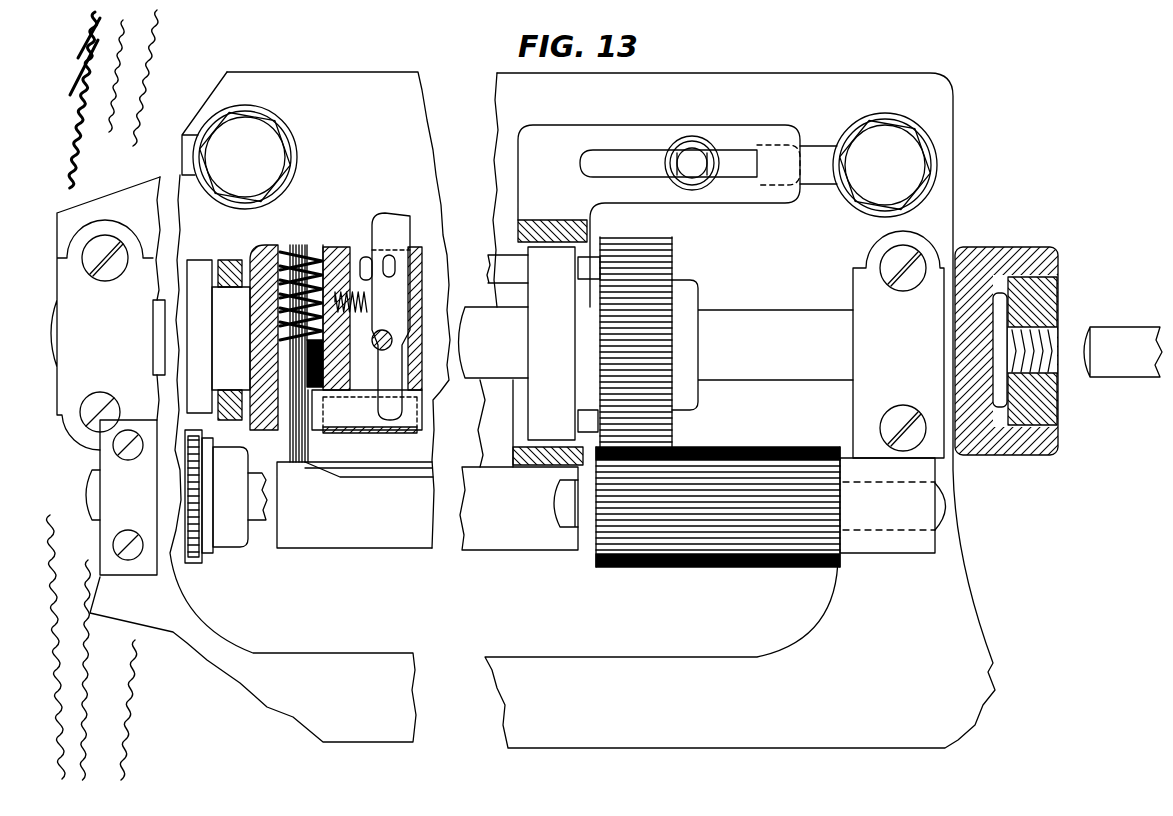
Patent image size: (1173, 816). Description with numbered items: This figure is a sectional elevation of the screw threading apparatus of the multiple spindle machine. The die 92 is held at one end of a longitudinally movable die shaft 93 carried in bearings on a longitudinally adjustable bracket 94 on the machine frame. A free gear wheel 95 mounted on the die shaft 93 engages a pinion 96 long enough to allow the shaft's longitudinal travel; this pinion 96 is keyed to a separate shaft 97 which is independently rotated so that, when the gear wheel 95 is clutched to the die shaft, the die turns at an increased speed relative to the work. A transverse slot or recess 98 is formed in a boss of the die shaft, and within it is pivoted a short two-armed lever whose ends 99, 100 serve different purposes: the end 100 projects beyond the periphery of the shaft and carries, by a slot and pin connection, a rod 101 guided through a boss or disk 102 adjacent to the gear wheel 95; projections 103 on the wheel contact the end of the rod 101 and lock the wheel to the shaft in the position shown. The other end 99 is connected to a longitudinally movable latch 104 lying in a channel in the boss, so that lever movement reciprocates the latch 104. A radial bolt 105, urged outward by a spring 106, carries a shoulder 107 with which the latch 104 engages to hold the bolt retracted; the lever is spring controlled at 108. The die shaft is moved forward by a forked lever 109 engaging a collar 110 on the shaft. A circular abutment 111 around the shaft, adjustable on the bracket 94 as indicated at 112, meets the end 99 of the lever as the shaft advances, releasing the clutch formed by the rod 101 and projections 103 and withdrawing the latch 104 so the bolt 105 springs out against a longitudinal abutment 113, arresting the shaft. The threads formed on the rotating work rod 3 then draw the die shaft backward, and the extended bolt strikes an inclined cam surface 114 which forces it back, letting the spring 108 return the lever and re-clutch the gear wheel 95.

The work rod 3 is at (1123, 352).
The die 92 is at (1055, 320).
The die shaft 93 is at (157, 323).
The bracket 94 is at (542, 410).
The free gear wheel 95 is at (665, 264).
The pinion 96 is at (760, 568).
The separate shaft 97 is at (258, 515).
The slot or recess 98 is at (342, 270).
The lever end 99 is at (430, 393).
The lever end 100 is at (392, 233).
The rod 101 is at (518, 265).
The boss or disk 102 is at (551, 343).
The projections 103 is at (593, 260).
The latch 104 is at (408, 418).
The bolt 105 is at (302, 253).
The spring 106 is at (278, 288).
The shoulder or projection 107 is at (325, 385).
The spring 108 is at (368, 299).
The forked lever 109 is at (238, 262).
The collar 110 is at (197, 345).
The circular abutment 111 is at (548, 232).
The adjustment 112 is at (698, 150).
The longitudinal abutment 113 is at (391, 470).
The inclined plane or cam surface 114 is at (322, 466).